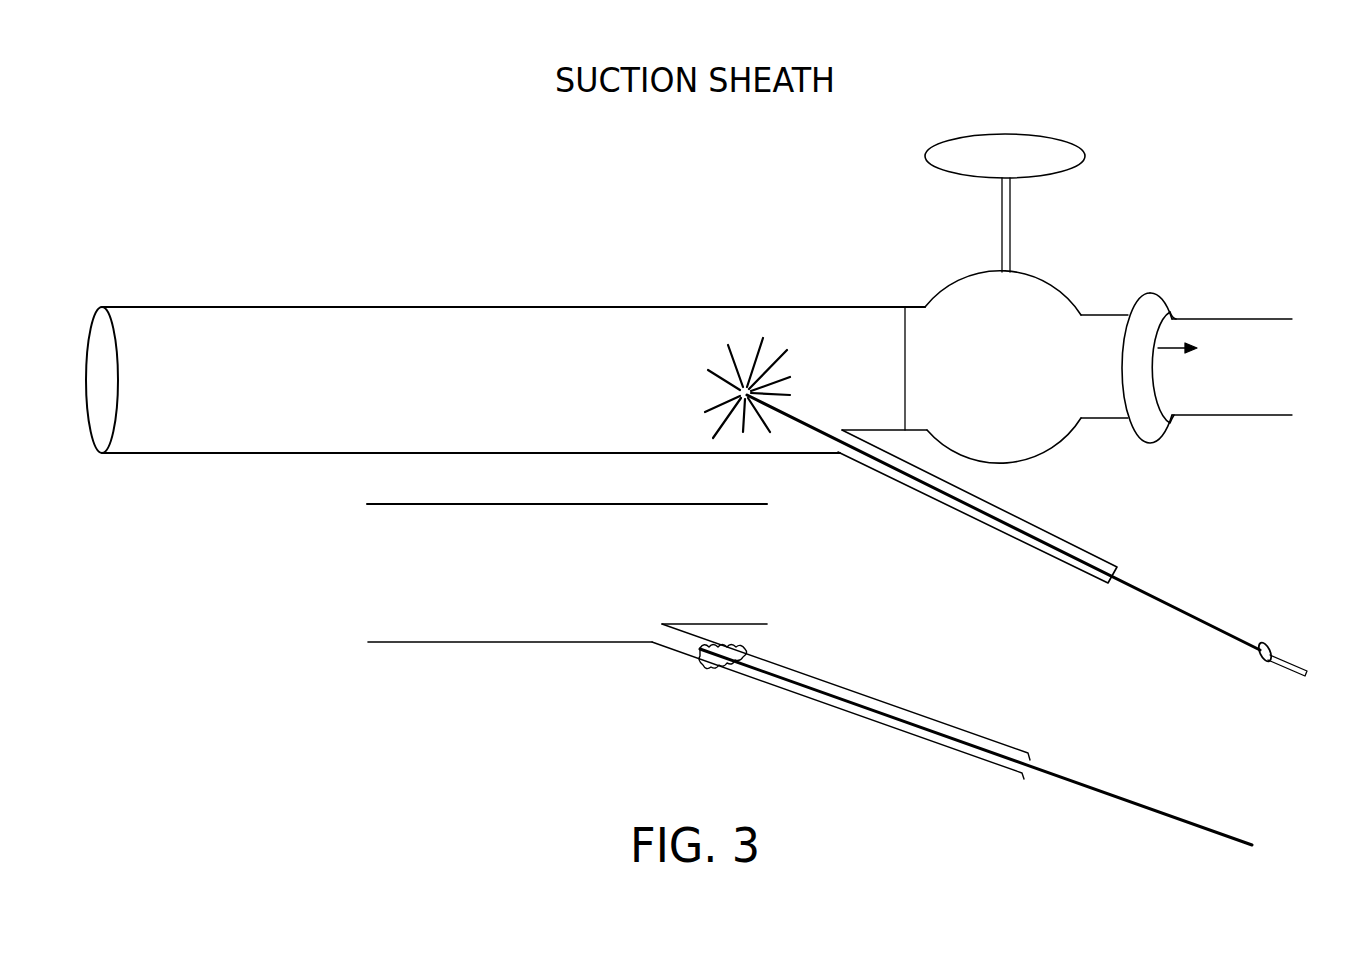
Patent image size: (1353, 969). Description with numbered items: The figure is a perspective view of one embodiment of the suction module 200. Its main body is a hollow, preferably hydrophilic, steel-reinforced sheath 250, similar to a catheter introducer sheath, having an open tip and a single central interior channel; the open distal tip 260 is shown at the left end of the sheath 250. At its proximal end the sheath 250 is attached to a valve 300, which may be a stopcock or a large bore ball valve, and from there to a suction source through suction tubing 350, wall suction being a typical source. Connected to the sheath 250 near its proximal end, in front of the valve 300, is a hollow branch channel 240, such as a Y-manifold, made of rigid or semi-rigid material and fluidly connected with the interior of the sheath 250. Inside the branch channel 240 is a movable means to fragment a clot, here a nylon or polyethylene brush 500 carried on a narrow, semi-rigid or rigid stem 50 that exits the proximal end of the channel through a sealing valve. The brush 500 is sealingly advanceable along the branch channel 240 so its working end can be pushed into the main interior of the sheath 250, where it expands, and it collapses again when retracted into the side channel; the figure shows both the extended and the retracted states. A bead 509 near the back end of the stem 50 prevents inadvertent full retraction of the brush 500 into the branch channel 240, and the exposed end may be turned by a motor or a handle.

The suction module 200 is at (556, 218).
The sheath 250 is at (238, 455).
The sheath distal opening 260 is at (100, 350).
The valve 300 is at (1048, 276).
The suction tubing 350 is at (1197, 327).
The branch channel 240 is at (917, 492).
The stem 50 is at (1137, 582).
The bead 509 is at (1270, 647).
The brush 500 is at (753, 355).